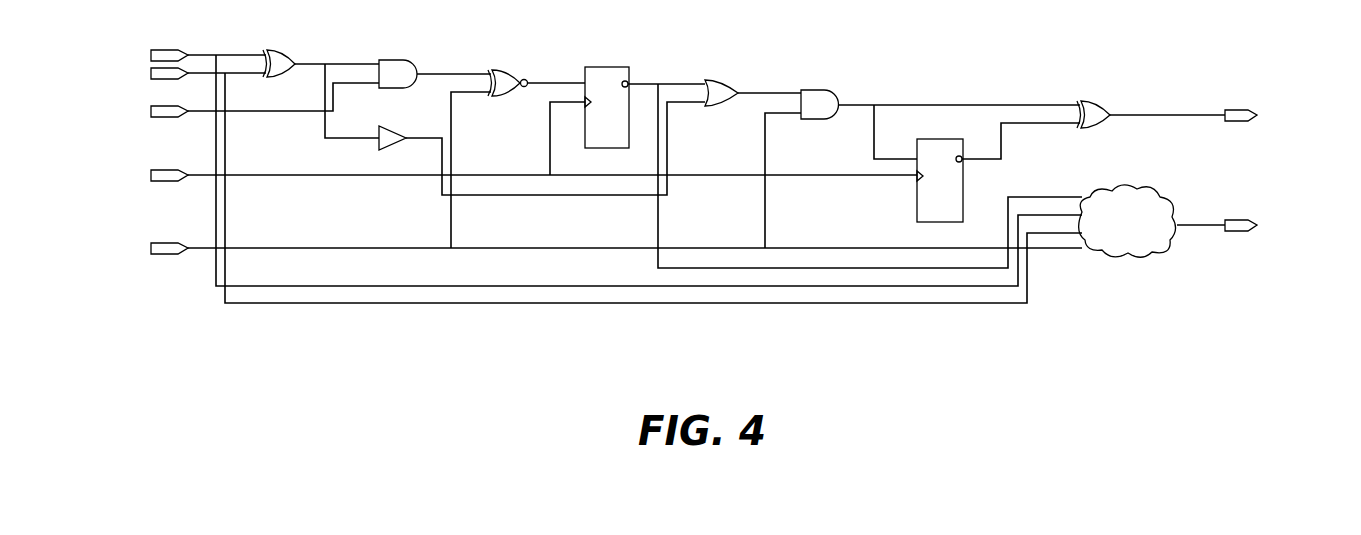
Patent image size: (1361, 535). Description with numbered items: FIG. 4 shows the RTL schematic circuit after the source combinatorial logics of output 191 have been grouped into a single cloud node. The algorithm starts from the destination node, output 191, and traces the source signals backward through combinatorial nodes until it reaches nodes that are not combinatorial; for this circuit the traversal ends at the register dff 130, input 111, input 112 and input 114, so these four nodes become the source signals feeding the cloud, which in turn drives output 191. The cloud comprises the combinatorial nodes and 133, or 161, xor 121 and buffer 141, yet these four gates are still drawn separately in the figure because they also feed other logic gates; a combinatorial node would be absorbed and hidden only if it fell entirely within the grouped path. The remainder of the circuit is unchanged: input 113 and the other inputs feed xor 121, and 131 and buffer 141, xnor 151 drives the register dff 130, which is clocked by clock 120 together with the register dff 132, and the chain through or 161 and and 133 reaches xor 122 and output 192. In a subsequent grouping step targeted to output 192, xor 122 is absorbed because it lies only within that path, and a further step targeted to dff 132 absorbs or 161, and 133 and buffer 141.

The input 111 is at (584, 167).
The input 112 is at (584, 184).
The input 113 is at (233, 101).
The input 114 is at (585, 174).
The clock 120 is at (501, 142).
The xor 121 is at (318, 84).
The xor 122 is at (1142, 104).
The dff 130 is at (832, 156).
The and 131 is at (433, 64).
The dff 132 is at (997, 169).
The and 133 is at (936, 113).
The buffer 141 is at (530, 148).
The xnor 151 is at (531, 73).
The or 161 is at (749, 82).
The output 191 is at (1206, 213).
The output 192 is at (1279, 115).